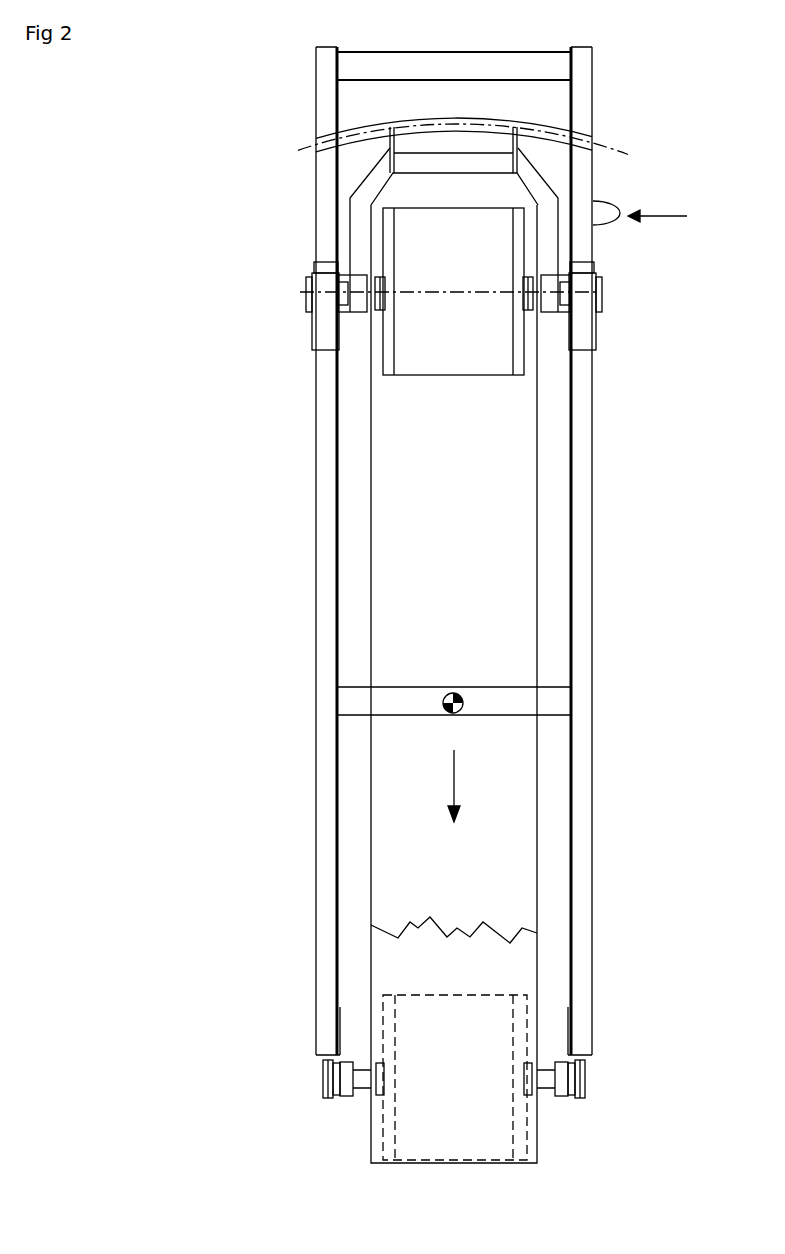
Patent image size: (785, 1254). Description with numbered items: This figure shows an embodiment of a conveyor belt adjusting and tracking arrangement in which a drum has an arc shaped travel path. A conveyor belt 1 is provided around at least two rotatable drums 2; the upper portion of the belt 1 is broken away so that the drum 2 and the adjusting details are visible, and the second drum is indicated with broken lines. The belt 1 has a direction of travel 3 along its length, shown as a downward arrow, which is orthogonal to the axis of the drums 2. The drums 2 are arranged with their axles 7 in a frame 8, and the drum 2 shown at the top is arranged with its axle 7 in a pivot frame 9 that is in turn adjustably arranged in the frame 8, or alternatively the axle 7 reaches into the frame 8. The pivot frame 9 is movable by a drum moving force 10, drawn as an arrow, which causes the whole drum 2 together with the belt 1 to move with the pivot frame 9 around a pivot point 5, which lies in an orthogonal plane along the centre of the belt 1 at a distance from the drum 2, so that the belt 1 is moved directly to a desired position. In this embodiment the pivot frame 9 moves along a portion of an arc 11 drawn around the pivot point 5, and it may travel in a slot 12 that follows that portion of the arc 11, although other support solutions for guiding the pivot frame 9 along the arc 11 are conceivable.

The conveyor belt 1 is at (510, 547).
The rotatable drum 2 is at (410, 335).
The direction of travel 3 is at (462, 782).
The pivot point 5 is at (463, 698).
The axle 7 is at (558, 283).
The frame 8 is at (582, 423).
The pivot frame 9 is at (347, 218).
The drum moving force 10 is at (663, 212).
The arc 11 is at (587, 142).
The slot 12 is at (365, 125).